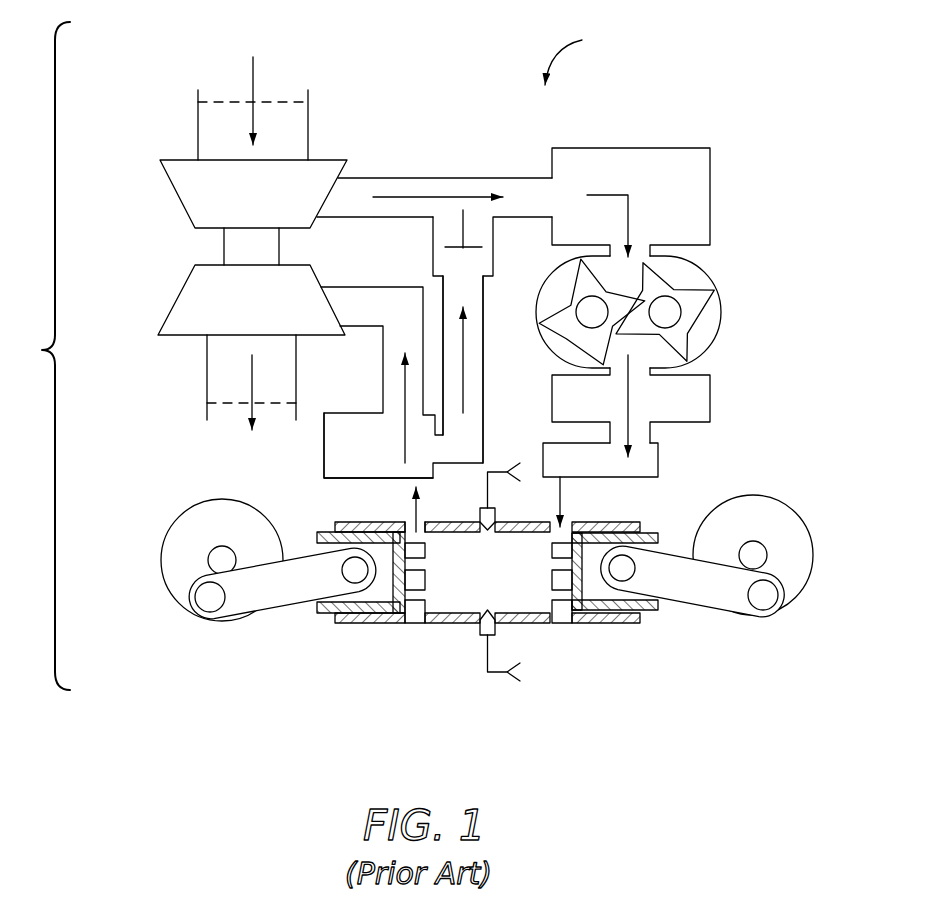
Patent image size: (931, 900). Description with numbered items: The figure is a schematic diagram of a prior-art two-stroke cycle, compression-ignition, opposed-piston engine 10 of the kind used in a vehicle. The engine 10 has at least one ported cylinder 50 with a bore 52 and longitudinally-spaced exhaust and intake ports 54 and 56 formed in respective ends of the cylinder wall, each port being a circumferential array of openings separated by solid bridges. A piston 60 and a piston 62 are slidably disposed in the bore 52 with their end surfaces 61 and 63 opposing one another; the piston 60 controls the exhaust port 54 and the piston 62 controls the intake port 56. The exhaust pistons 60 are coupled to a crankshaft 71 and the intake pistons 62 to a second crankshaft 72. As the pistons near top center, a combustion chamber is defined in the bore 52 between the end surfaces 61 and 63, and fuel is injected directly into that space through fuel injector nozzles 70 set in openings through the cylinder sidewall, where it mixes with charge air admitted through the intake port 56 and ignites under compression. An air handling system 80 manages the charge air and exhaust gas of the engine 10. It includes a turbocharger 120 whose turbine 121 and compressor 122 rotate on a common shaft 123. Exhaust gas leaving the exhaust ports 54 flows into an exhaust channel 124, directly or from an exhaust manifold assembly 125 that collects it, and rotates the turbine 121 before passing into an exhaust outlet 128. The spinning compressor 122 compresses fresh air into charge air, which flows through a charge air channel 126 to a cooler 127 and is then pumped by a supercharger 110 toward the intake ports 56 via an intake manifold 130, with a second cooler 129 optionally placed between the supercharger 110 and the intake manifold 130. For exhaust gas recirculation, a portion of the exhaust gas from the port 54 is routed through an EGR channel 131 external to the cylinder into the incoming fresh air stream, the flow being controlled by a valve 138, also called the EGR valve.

The opposed-piston engine 10 is at (41, 356).
The ported cylinder 50 is at (470, 579).
The bore 52 is at (500, 587).
The exhaust port 54 is at (415, 624).
The intake port 56 is at (562, 623).
The exhaust piston 60 is at (319, 615).
The end surface 61 is at (408, 552).
The intake piston 62 is at (650, 522).
The end surface 63 is at (556, 570).
The fuel injector nozzle 70 is at (492, 521).
The crankshaft 71 is at (170, 523).
The crankshaft 72 is at (790, 506).
The air handling system 80 is at (580, 56).
The supercharger 110 is at (700, 272).
The turbocharger 120 is at (237, 180).
The turbine 121 is at (173, 305).
The compressor 122 is at (175, 195).
The common shaft 123 is at (280, 245).
The exhaust channel 124 is at (383, 345).
The exhaust manifold assembly 125 is at (324, 478).
The charge air channel 126 is at (425, 178).
The cooler 127 is at (712, 205).
The exhaust outlet 128 is at (207, 385).
The second cooler 129 is at (712, 395).
The intake manifold 130 is at (658, 460).
The EGR channel 131 is at (492, 334).
The valve 138 is at (470, 226).